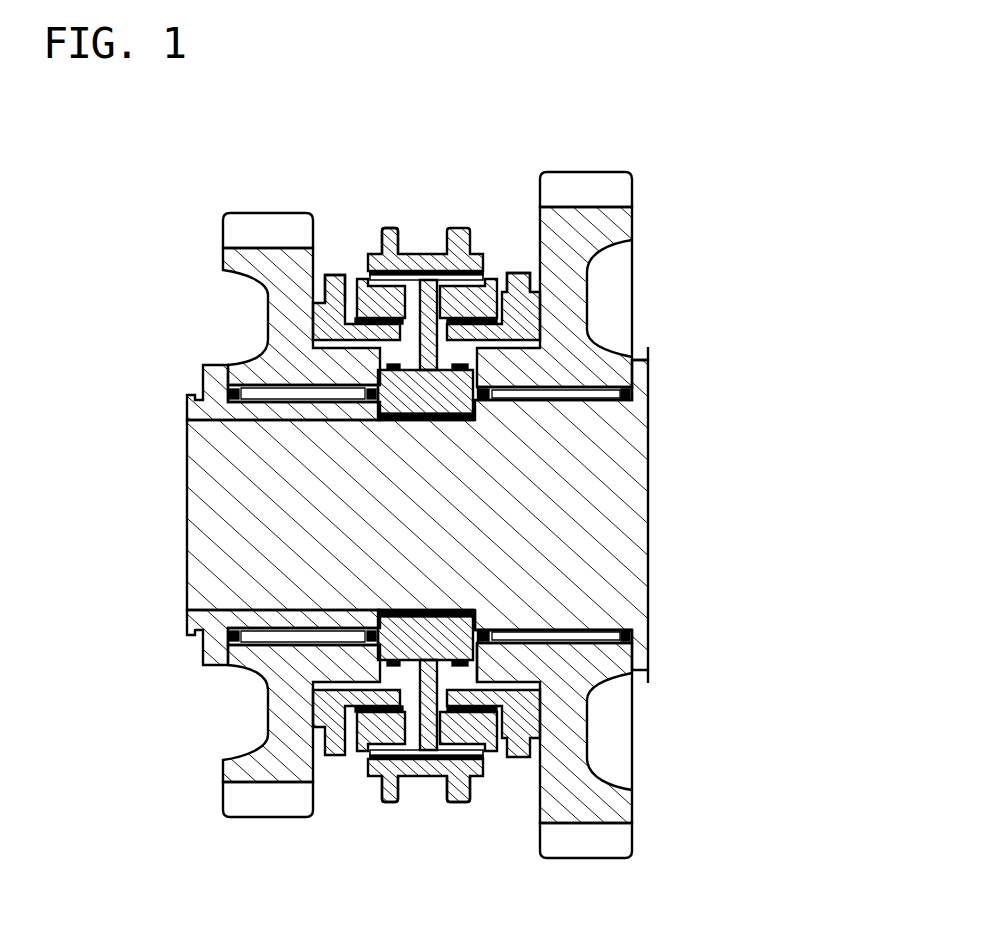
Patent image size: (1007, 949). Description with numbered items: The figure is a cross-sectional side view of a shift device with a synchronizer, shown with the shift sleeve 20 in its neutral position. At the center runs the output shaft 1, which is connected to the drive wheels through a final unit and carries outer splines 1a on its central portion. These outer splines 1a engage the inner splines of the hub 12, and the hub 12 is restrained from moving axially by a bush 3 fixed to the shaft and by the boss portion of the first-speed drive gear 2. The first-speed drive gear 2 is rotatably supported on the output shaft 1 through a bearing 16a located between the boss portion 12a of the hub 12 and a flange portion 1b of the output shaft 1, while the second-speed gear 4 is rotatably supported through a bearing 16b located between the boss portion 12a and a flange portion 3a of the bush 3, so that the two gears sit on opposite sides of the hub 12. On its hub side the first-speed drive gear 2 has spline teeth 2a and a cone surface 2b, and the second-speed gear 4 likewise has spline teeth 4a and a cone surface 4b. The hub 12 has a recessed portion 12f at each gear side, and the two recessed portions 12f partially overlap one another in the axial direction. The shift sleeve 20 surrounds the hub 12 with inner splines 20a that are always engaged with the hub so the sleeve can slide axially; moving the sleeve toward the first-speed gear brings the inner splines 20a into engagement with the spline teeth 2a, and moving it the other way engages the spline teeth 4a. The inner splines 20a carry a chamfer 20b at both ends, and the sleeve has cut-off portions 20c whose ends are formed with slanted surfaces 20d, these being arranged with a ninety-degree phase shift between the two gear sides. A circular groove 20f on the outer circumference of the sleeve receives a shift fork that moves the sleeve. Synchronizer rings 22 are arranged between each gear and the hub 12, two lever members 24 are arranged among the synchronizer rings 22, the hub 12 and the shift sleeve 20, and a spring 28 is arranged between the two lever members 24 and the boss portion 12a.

The output shaft 1 is at (606, 456).
The outer splines 1a is at (443, 613).
The flange portion 1b is at (645, 355).
The first-speed drive gear 2 is at (607, 190).
The spline teeth 2a is at (539, 290).
The cone surface 2b is at (521, 283).
The bush 3 is at (205, 375).
The flange portion 3a is at (212, 652).
The second-speed gear 4 is at (258, 232).
The spline teeth 4a is at (332, 283).
The cone surface 4b is at (352, 312).
The hub 12 is at (500, 688).
The boss portion 12a is at (478, 623).
The recessed portion 12f is at (428, 350).
The bearing 16a is at (560, 393).
The bearing 16b is at (280, 390).
The shift sleeve 20 is at (452, 785).
The inner splines 20a is at (478, 772).
The chamfer 20b is at (364, 757).
The cut-off portion 20c is at (445, 275).
The slanted surface 20d is at (412, 252).
The circular groove 20f is at (437, 760).
The synchronizer ring 22 is at (362, 286).
The lever member 24 is at (470, 248).
The spring 28 is at (358, 338).